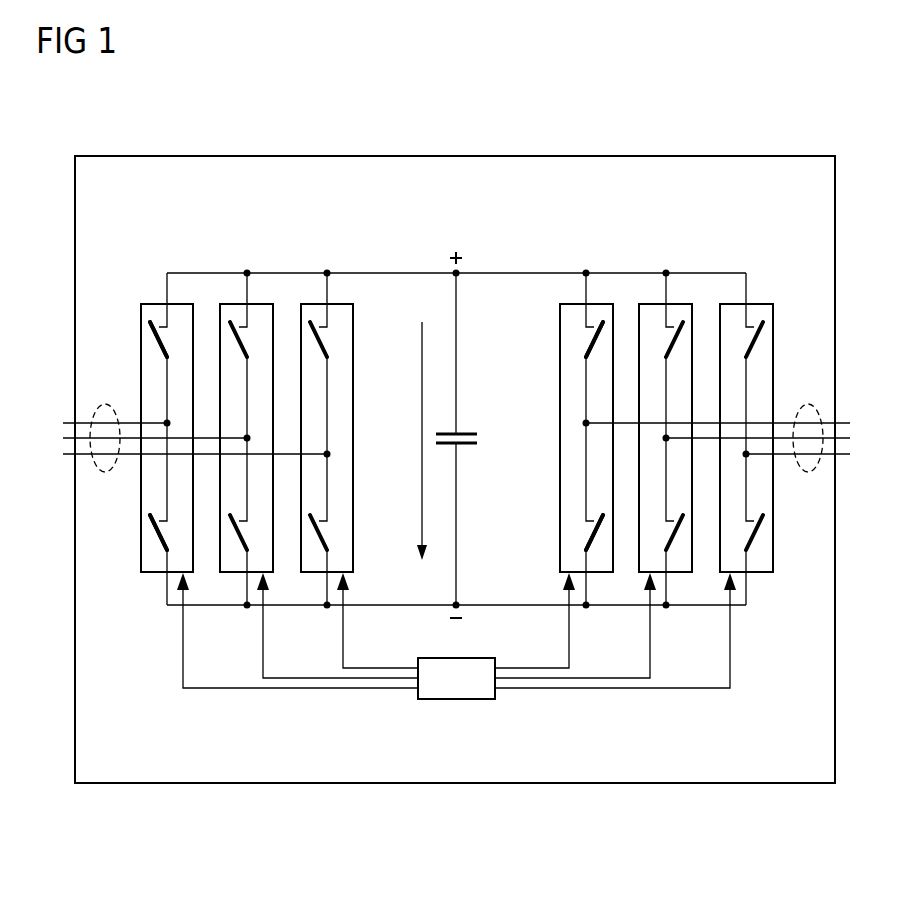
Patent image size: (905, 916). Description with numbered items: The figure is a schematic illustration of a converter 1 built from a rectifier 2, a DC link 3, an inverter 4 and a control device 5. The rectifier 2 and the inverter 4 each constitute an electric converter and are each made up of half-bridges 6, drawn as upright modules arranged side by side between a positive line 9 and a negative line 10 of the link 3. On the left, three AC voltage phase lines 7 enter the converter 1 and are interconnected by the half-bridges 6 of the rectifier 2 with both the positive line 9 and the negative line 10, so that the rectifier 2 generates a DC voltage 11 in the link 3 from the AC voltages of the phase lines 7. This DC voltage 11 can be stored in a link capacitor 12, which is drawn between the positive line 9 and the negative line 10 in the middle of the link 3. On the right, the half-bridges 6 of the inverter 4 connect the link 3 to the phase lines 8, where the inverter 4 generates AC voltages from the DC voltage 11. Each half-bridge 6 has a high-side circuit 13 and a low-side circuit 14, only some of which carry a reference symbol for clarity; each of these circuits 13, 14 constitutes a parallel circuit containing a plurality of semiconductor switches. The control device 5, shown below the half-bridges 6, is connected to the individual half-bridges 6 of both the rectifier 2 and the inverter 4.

The converter 1 is at (521, 156).
The rectifier 2 is at (394, 306).
The DC link 3 is at (578, 241).
The inverter 4 is at (518, 308).
The control device 5 is at (457, 703).
The half-bridge 6 is at (183, 304).
The AC voltage phase lines 7 is at (92, 463).
The AC voltage phase lines 8 is at (808, 472).
The positive line 9 is at (543, 273).
The negative line 10 is at (382, 605).
The DC voltage 11 is at (422, 393).
The link capacitor 12 is at (468, 448).
The high-side circuit 13 is at (157, 345).
The low-side circuit 14 is at (157, 541).